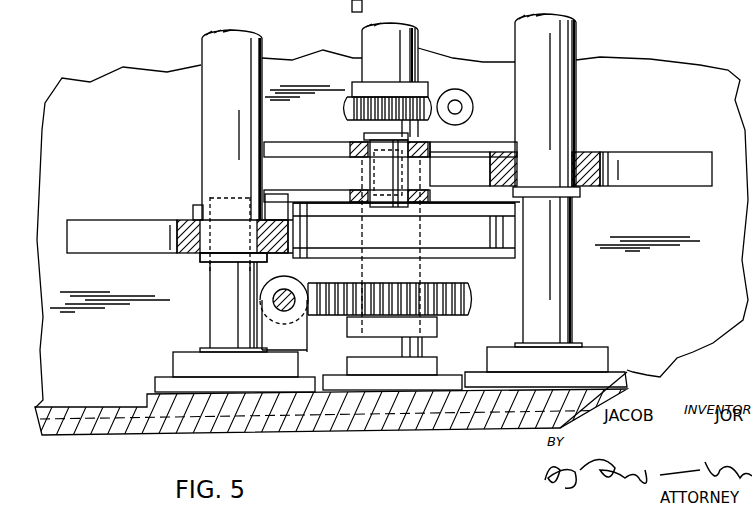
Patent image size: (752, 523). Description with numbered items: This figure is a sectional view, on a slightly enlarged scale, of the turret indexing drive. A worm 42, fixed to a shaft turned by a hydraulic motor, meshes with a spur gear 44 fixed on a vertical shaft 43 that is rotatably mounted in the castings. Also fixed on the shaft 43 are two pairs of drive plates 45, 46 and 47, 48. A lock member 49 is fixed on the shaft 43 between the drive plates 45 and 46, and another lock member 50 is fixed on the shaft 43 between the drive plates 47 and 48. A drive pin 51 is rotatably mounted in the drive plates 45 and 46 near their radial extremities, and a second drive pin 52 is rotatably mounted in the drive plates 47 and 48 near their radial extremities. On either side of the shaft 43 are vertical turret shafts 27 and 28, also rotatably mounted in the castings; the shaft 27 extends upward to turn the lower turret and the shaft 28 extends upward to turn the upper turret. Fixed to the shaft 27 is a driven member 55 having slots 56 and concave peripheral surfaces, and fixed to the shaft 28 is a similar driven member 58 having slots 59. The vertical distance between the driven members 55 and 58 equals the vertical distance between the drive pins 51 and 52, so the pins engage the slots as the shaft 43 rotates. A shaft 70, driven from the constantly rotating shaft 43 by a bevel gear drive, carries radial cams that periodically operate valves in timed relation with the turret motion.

The vertical turret shaft 27 is at (577, 108).
The vertical turret shaft 28 is at (262, 47).
The worm 42 is at (302, 284).
The vertical shaft 43 is at (420, 36).
The spur gear 44 is at (475, 302).
The drive plate 45 is at (473, 258).
The drive plate 46 is at (515, 205).
The drive plate 47 is at (273, 195).
The drive plate 48 is at (458, 146).
The lock member 49 is at (500, 232).
The lock member 50 is at (301, 167).
The drive pin 51 is at (228, 241).
The second drive pin 52 is at (377, 167).
The driven member 55 is at (585, 152).
The slots 56 is at (670, 158).
The driven member 58 is at (192, 223).
The slots 59 is at (92, 232).
The shaft 70 is at (456, 106).